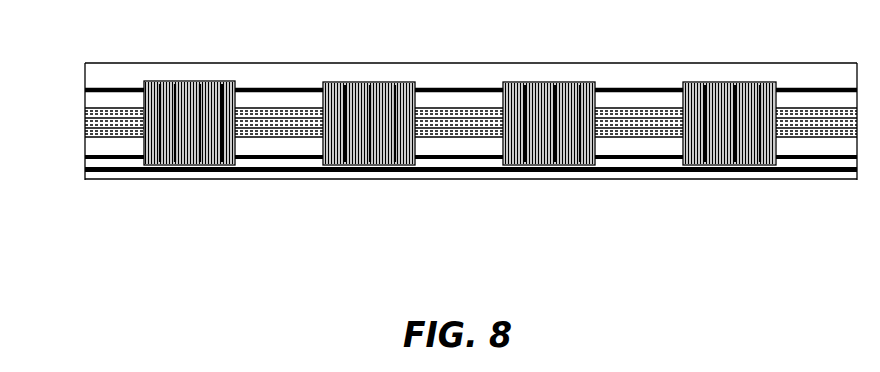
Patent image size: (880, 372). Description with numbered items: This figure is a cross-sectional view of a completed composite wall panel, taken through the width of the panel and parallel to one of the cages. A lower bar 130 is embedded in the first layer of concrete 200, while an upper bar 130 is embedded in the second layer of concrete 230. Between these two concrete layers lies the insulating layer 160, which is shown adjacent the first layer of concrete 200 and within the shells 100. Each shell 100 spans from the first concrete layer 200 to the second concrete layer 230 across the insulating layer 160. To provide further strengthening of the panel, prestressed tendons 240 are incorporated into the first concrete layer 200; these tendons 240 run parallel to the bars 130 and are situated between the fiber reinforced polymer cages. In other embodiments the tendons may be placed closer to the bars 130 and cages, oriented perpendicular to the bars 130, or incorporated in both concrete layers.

The shell 100 is at (219, 149).
The bar 130 is at (807, 87).
The insulating layer 160 is at (98, 118).
The first layer of concrete 200 is at (130, 175).
The second layer of concrete 230 is at (98, 76).
The prestressed tendons 240 is at (645, 172).